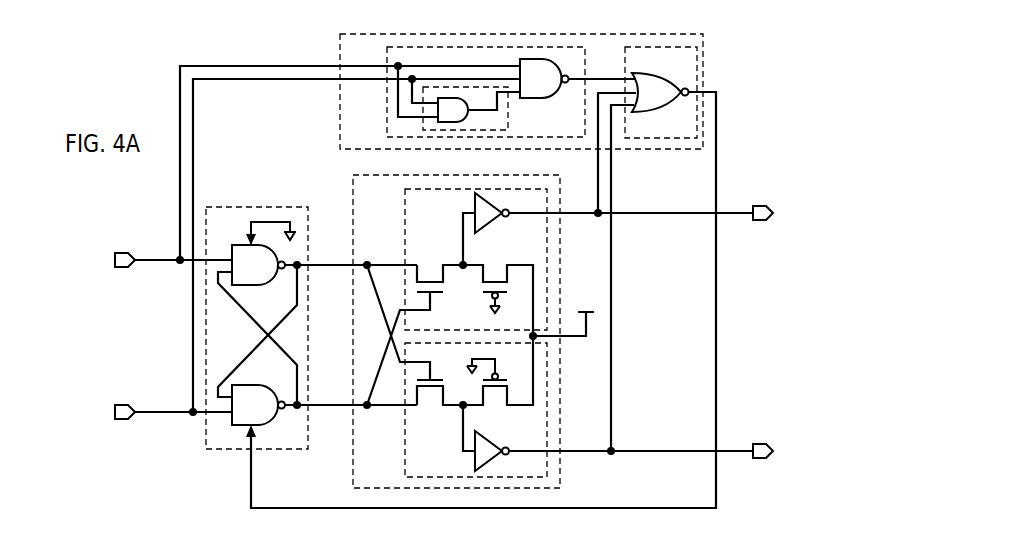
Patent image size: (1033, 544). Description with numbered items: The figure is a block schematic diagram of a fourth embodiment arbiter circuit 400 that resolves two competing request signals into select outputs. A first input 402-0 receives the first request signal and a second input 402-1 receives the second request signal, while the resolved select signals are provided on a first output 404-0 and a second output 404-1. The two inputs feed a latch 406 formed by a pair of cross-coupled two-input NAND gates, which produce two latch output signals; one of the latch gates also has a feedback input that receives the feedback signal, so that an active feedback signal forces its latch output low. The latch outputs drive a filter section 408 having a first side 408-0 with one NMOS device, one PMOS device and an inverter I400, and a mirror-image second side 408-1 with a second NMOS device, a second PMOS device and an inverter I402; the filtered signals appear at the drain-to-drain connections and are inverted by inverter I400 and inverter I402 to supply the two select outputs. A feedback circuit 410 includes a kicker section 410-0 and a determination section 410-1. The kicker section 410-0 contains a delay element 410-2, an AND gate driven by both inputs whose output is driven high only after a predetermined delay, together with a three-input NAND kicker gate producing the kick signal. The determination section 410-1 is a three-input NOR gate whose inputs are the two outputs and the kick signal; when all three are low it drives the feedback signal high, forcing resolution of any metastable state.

The arbiter circuit 400 is at (762, 77).
The first input 402-0 is at (122, 268).
The second input 402-1 is at (120, 405).
The first output 404-0 is at (765, 224).
The second output 404-1 is at (765, 443).
The latch 406 is at (205, 432).
The filter section 408 is at (560, 254).
The first side 408-0 is at (547, 272).
The second side 408-1 is at (547, 418).
The feedback circuit 410 is at (340, 44).
The kicker section 410-0 is at (387, 108).
The determination section 410-1 is at (660, 138).
The delay element 410-2 is at (423, 127).
The inverter I400 is at (488, 208).
The inverter I402 is at (484, 458).